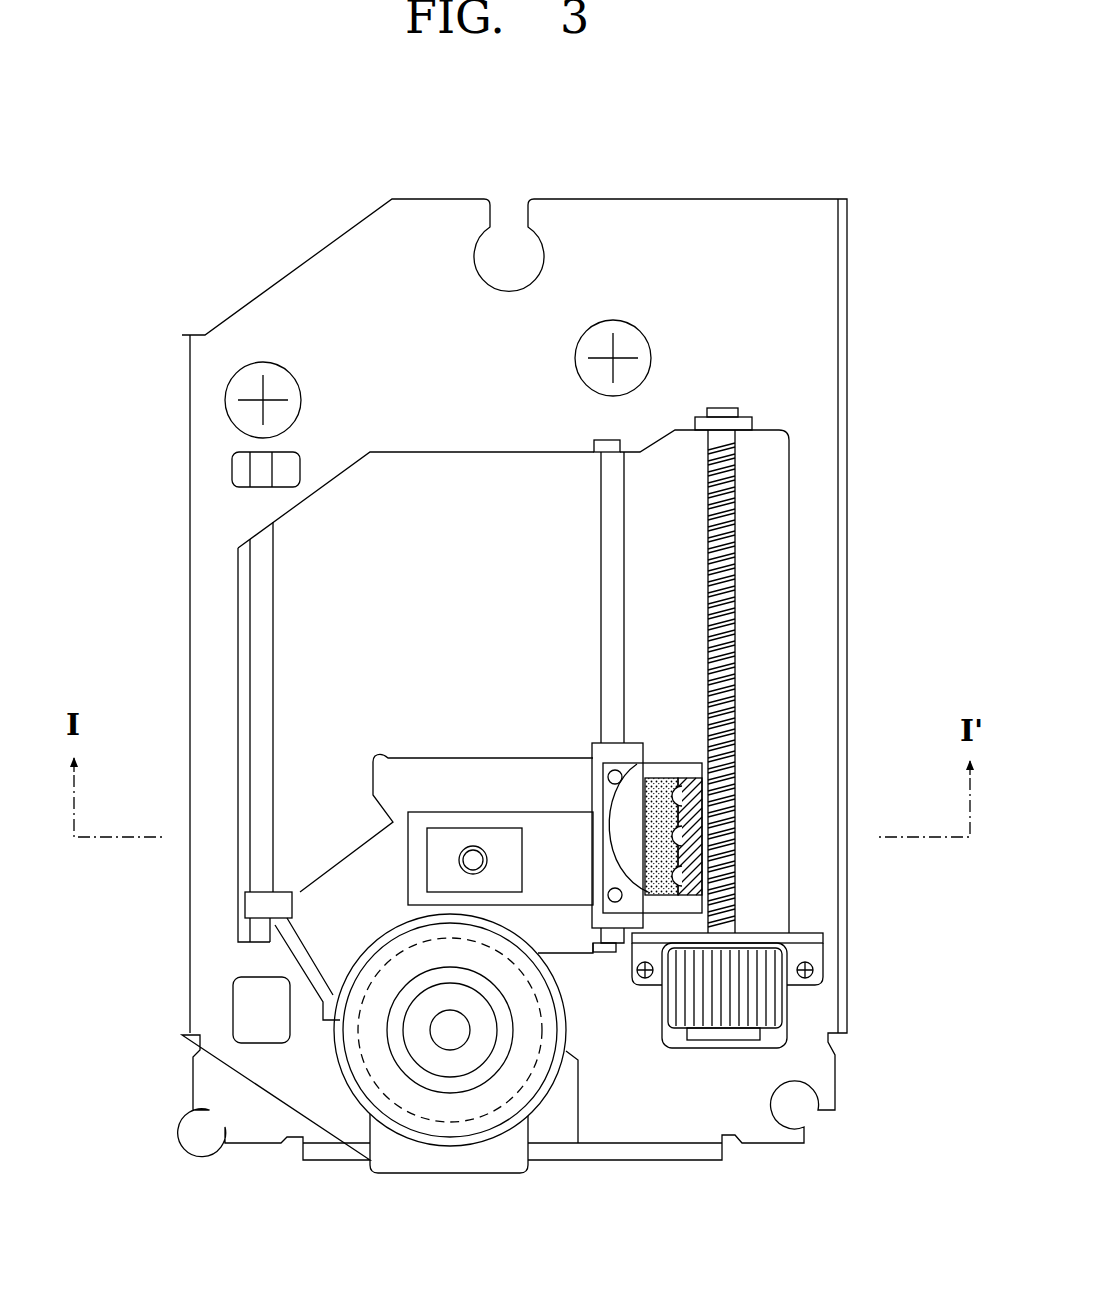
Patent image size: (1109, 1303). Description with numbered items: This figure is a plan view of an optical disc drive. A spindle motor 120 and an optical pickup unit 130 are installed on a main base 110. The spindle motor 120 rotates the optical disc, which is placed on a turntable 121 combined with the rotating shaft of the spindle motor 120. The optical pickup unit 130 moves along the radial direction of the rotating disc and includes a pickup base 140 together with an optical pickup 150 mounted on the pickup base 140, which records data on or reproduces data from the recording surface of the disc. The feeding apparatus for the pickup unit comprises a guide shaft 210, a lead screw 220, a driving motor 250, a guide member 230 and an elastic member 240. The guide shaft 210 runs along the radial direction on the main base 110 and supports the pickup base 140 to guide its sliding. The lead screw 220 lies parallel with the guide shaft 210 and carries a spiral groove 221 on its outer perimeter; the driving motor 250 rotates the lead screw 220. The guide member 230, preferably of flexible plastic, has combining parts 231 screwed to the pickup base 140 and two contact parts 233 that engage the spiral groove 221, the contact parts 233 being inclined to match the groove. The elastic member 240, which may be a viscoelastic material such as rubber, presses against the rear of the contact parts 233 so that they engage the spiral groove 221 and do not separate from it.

The main base 110 is at (806, 332).
The spindle motor 120 is at (482, 1125).
The turntable 121 is at (400, 1125).
The optical pickup unit 130 is at (421, 746).
The pickup base 140 is at (472, 760).
The optical pickup 150 is at (478, 855).
The guide shaft 210 is at (263, 567).
The lead screw 220 is at (748, 654).
The spiral groove 221 is at (703, 803).
The guide member 230 is at (670, 746).
The combining parts 231 is at (617, 770).
The contact parts 233 is at (705, 867).
The elastic member 240 is at (690, 763).
The driving motor 250 is at (772, 998).